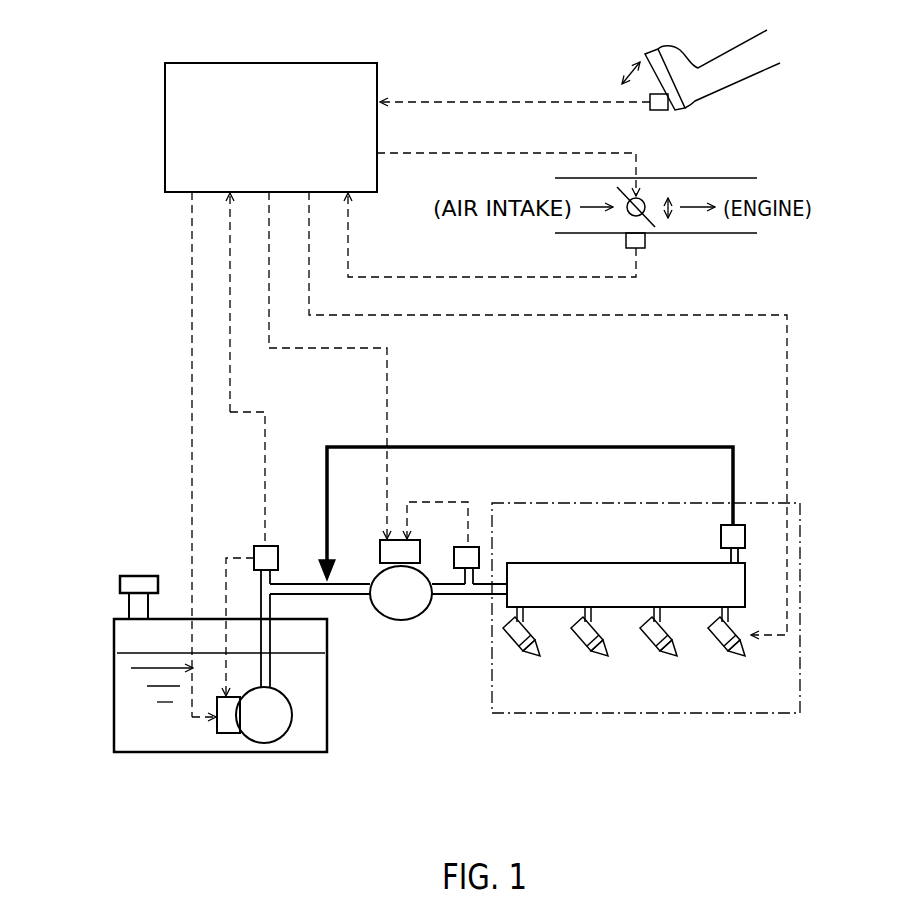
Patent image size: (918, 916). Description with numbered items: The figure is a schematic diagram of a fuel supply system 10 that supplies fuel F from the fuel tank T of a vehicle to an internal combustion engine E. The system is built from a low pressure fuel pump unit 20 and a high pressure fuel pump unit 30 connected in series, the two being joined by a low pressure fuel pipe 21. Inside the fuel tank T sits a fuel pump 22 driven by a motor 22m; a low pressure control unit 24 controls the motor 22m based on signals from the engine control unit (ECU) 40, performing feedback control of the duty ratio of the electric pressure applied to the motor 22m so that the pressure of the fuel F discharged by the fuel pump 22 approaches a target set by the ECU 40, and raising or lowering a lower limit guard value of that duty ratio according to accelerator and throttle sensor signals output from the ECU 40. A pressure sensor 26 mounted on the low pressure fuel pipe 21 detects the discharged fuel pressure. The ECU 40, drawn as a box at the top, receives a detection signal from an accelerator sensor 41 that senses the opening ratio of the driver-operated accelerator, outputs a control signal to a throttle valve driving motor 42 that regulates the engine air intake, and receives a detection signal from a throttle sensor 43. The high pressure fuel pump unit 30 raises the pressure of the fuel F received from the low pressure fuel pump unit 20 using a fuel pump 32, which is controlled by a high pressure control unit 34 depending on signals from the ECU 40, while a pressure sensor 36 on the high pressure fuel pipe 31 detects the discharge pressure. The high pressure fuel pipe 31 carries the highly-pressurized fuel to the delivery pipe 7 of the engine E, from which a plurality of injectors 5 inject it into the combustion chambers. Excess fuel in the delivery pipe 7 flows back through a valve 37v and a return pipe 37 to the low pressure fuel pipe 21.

The engine control unit (ECU) 40 is at (204, 63).
The accelerator sensor 41 is at (657, 111).
The throttle valve driving motor 42 is at (650, 198).
The throttle sensor 43 is at (645, 243).
The fuel supply system 10 is at (177, 427).
The low pressure fuel pump unit 20 is at (197, 645).
The fuel tank T is at (112, 672).
The fuel F is at (143, 730).
The fuel pump 22 is at (277, 710).
The motor 22m is at (247, 720).
The low pressure control unit 24 is at (228, 722).
The pressure sensor 26 is at (268, 558).
The low pressure fuel pipe 21 is at (343, 594).
The high pressure fuel pump unit 30 is at (421, 528).
The fuel pump 32 is at (394, 600).
The high pressure control unit 34 is at (408, 554).
The pressure sensor 36 is at (471, 553).
The high pressure fuel pipe 31 is at (458, 594).
The return pipe 37 is at (606, 446).
The valve 37v is at (736, 538).
The engine E is at (642, 714).
The delivery pipe 7 is at (580, 588).
The injectors 5 is at (513, 642).